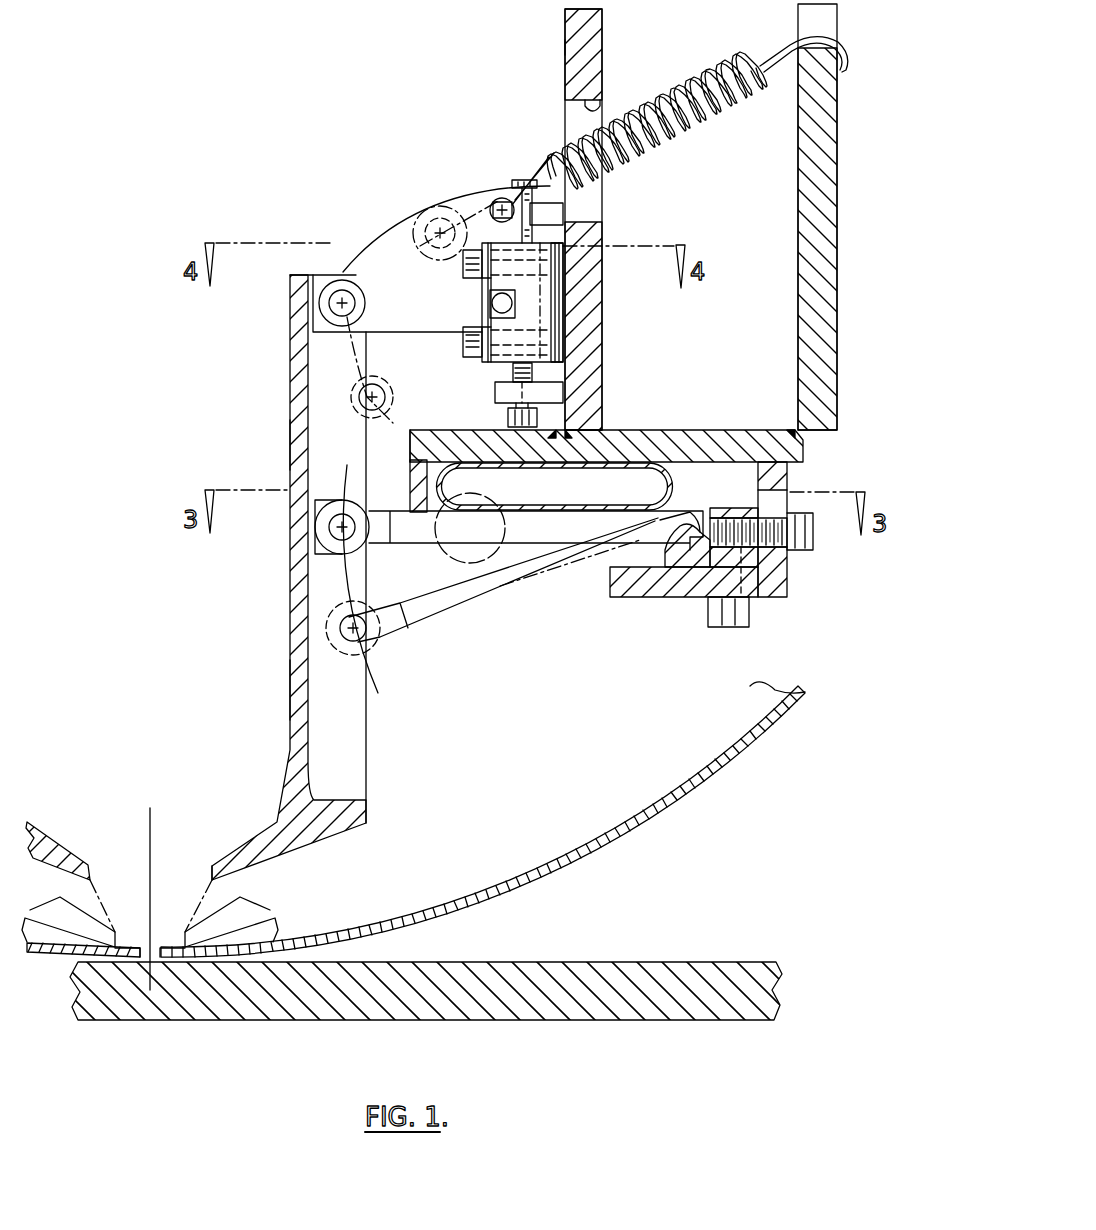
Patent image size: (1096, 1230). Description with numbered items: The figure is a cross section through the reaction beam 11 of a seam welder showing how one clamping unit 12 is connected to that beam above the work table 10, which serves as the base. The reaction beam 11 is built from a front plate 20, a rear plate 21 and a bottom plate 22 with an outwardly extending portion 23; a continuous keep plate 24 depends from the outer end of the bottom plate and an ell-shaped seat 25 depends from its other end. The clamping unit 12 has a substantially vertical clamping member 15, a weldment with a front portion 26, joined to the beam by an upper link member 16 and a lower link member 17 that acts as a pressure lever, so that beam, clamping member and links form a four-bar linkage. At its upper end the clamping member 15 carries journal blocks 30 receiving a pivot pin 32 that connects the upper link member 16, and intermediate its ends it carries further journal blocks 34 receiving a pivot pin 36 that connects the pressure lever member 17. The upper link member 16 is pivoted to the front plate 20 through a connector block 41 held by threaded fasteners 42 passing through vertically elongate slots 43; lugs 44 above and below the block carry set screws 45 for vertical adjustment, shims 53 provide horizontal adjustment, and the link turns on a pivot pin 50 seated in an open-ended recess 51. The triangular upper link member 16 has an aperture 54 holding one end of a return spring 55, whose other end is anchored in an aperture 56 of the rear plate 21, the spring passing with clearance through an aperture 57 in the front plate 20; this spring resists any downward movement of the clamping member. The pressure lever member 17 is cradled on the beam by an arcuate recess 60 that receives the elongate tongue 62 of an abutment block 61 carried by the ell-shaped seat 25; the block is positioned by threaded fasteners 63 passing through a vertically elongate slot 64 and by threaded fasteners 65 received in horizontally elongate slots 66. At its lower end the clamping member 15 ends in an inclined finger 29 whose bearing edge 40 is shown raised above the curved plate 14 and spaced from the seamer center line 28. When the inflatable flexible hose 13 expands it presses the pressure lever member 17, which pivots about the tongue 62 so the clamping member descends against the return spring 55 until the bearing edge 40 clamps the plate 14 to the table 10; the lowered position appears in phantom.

The work table 10 is at (631, 962).
The reaction beam 11 is at (560, 46).
The clamping unit 12 is at (292, 388).
The inflatable flexible hose 13 is at (455, 542).
The curved plate 14 is at (60, 958).
The clamping member 15 is at (289, 688).
The upper link member 16 is at (395, 242).
The lower link member 17 is at (388, 511).
The front plate 20 is at (603, 17).
The rear plate 21 is at (838, 12).
The bottom plate 22 is at (695, 430).
The outwardly extending portion 23 is at (432, 444).
The keep plate 24 is at (415, 470).
The ell-shaped seat 25 is at (625, 598).
The front portion 26 is at (290, 440).
The center line of the seamer 28 is at (148, 1000).
The finger 29 is at (90, 862).
The journal blocks 30 is at (320, 334).
The pivot pin 32 is at (342, 290).
The journal blocks 34 is at (322, 487).
The pivot pin 36 is at (315, 540).
The bearing edge 40 is at (90, 880).
The connector block 41 is at (560, 300).
The threaded fasteners 42 is at (470, 249).
The vertically elongate slots 43 is at (486, 328).
The lugs 44 is at (542, 213).
The set screws 45 is at (520, 178).
The pivot pin 50 is at (523, 318).
The open-ended recess 51 is at (510, 298).
The shims 53 is at (534, 372).
The aperture 54 is at (494, 200).
The return spring 55 is at (725, 108).
The aperture 56 is at (808, 24).
The aperture 57 is at (600, 109).
The arcuate recess 60 is at (690, 570).
The abutment block 61 is at (722, 508).
The tongue 62 is at (700, 567).
The threaded fasteners 63 is at (810, 545).
The vertically elongate slot 64 is at (790, 500).
The threaded fasteners 65 is at (747, 628).
The horizontally elongate slots 66 is at (735, 598).